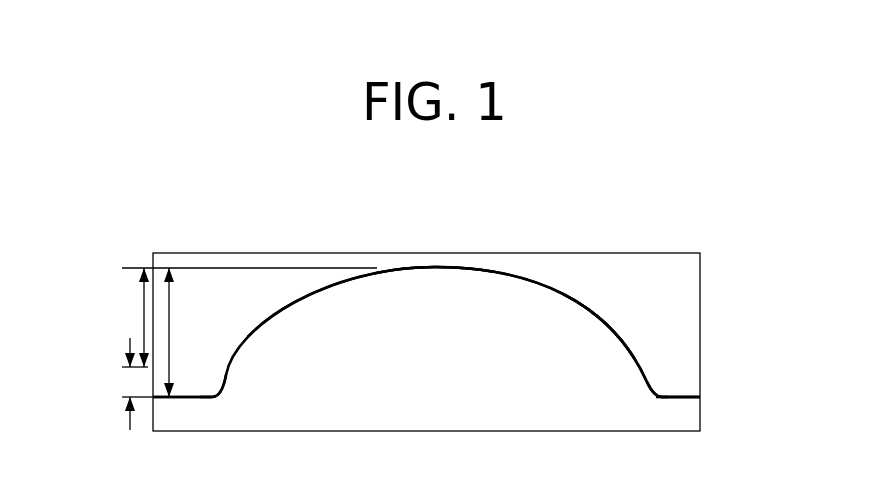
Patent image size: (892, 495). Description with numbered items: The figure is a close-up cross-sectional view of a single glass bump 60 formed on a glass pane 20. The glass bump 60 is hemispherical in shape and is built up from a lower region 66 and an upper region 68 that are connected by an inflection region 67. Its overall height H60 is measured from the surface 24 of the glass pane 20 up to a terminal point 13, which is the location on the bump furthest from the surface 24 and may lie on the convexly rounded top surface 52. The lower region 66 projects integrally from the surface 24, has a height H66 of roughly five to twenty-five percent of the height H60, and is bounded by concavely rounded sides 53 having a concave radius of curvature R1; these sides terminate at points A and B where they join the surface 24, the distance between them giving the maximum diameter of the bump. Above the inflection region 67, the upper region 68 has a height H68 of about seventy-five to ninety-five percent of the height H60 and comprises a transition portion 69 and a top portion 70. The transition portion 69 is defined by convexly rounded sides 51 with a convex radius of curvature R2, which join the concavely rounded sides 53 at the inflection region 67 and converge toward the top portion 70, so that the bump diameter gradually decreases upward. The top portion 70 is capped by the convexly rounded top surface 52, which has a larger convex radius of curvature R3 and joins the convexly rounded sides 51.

The terminal point 13 is at (442, 268).
The glass pane 20 is at (690, 418).
The surface 24 is at (692, 396).
The convexly rounded sides 51 is at (285, 305).
The convexly rounded top surface 52 is at (495, 272).
The concavely rounded sides 53 is at (218, 396).
The glass bump 60 is at (622, 363).
The lower region 66 is at (654, 380).
The inflection region 67 is at (639, 346).
The upper region 68 is at (565, 288).
The transition portion 69 is at (590, 303).
The top portion 70 is at (428, 263).
The concave radius of curvature R1 is at (210, 390).
The convex radius of curvature R2 is at (292, 306).
The convex radius of curvature R3 is at (440, 271).
The height H60 is at (249, 332).
The height H68 is at (122, 317).
The height H66 is at (128, 382).
The point A is at (207, 400).
The point B is at (656, 400).